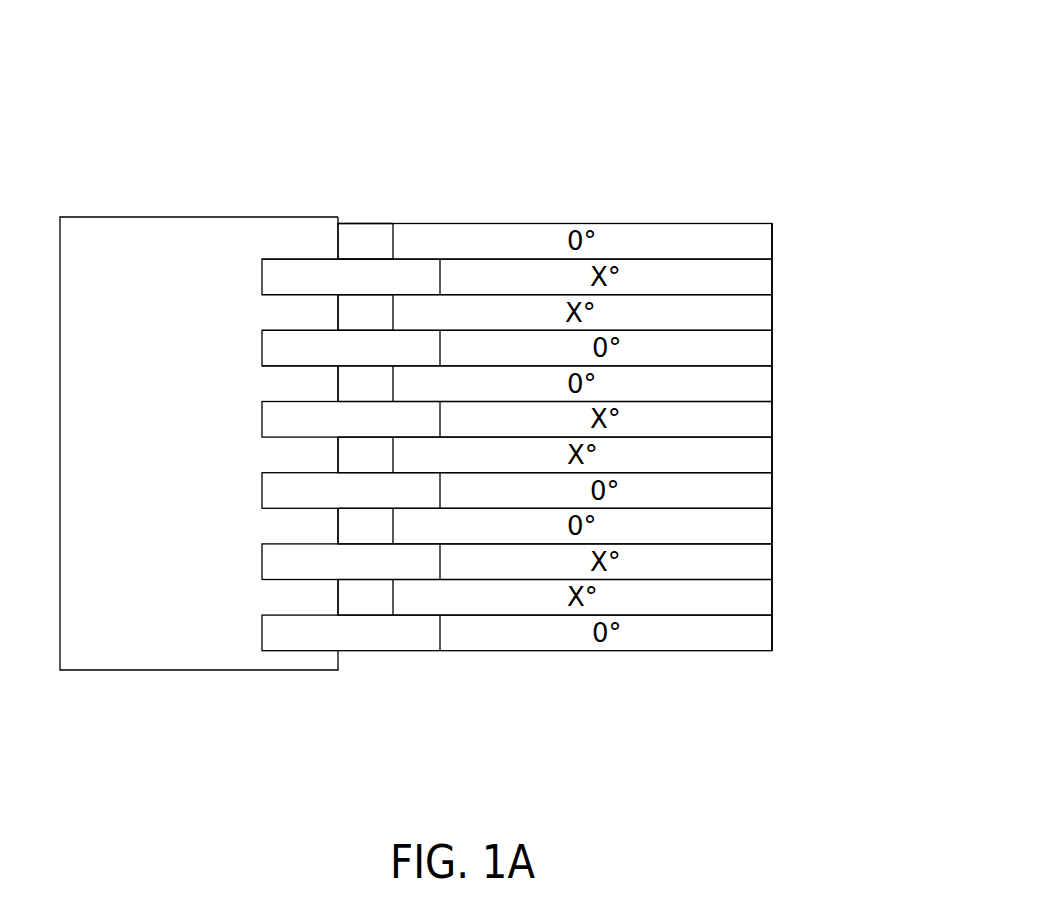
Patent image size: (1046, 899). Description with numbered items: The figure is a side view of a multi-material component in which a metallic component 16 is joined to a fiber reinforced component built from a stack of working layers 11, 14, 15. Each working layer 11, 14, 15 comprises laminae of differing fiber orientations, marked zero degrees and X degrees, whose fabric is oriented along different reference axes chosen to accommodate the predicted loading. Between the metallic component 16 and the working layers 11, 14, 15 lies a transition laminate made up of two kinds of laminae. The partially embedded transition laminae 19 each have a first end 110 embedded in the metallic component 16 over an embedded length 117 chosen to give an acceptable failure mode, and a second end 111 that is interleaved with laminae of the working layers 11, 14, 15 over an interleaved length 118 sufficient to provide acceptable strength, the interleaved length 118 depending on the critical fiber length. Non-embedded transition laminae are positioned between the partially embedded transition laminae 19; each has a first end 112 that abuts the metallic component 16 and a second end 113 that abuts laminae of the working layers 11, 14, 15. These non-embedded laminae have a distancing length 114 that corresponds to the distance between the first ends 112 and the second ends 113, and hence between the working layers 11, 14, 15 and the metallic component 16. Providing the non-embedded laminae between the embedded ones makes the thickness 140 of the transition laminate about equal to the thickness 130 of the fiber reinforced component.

The metallic component 16 is at (113, 255).
The first end 110 is at (262, 331).
The first end 112 is at (337, 320).
The partially embedded transition laminae 19 is at (310, 348).
The second end 111 is at (441, 497).
The second end 113 is at (393, 598).
The distancing length 114 is at (393, 218).
The embedded length 117 is at (338, 686).
The interleaved length 118 is at (367, 317).
The thickness of transition laminate 140 is at (207, 224).
The thickness of fiber reinforced component 130 is at (876, 224).
The working layer 11 is at (783, 224).
The second working layer 14 is at (783, 366).
The third working layer 15 is at (783, 508).